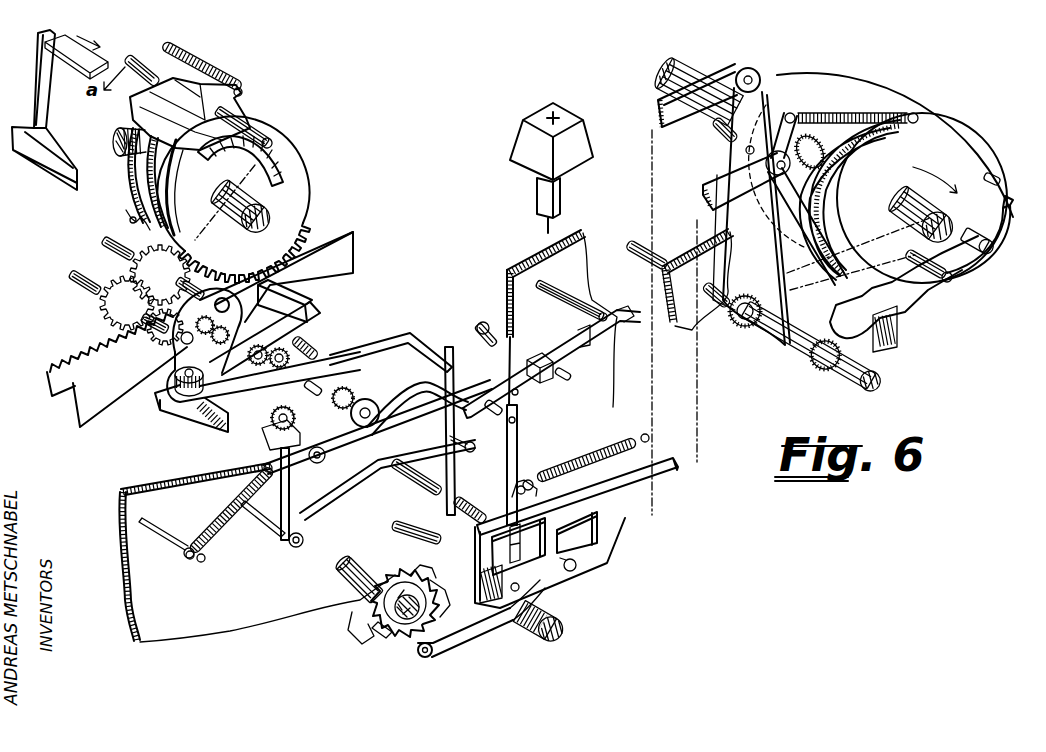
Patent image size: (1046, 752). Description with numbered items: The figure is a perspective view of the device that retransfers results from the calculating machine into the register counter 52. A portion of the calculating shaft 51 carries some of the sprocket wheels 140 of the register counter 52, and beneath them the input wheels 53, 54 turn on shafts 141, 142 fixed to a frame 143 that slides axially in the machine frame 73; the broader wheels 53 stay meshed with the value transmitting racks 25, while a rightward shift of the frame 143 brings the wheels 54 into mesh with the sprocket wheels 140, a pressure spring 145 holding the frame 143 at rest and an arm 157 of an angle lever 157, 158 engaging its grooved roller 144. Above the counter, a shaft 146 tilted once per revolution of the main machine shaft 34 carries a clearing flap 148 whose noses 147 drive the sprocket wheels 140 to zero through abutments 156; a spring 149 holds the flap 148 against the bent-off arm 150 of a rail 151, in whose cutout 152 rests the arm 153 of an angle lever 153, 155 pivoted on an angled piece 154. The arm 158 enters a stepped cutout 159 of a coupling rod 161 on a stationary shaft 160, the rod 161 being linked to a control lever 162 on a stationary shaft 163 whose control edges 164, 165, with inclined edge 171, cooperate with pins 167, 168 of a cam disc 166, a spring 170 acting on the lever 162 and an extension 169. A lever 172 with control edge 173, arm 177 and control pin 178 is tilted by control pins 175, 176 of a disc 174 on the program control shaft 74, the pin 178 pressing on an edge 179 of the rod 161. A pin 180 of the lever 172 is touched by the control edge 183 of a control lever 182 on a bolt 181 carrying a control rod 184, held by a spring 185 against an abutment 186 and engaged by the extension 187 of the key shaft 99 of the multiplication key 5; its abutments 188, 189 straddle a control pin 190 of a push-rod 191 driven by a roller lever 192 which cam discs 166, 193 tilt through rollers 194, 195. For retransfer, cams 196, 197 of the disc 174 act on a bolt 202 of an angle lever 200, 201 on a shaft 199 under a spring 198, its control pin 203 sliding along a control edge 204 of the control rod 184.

The multiplication key 5 is at (575, 145).
The value transmitting racks 25 is at (72, 406).
The main machine shaft 34 is at (668, 72).
The calculating shaft 51 is at (268, 216).
The register counter 52 is at (293, 173).
The input wheels 53 is at (98, 300).
The input wheels 54 is at (120, 263).
The machine frame 73 is at (325, 352).
The program control shaft 74 is at (345, 580).
The key shaft 99 is at (560, 200).
The sprocket wheels 140 is at (272, 152).
The shaft 141 is at (72, 276).
The shaft 142 is at (110, 240).
The frame 143 is at (157, 355).
The roller 144 is at (378, 400).
The pressure spring 145 is at (268, 352).
The shaft 146 is at (257, 127).
The noses 147 is at (143, 120).
The clearing flap 148 is at (156, 78).
The spring 149 is at (217, 61).
The bent-off arm 150 is at (44, 62).
The rail 151 is at (25, 153).
The cutout 152 is at (298, 292).
The arm of angle lever 153 is at (313, 297).
The angled piece 154 is at (203, 417).
The arm of angle lever 155 is at (387, 343).
The abutments 156 is at (131, 219).
The arm of angle lever 157 is at (365, 398).
The arm of angle lever 158 is at (377, 480).
The stepped cutout 159 is at (500, 540).
The machine stationary shaft 160 is at (577, 566).
The coupling rod 161 is at (667, 483).
The control lever 162 is at (795, 347).
The machine stationary shaft 163 is at (856, 382).
The control edge 164 is at (957, 282).
The control edge 165 is at (935, 128).
The cam disc 166 is at (958, 147).
The pin 167 is at (947, 283).
The pin 168 is at (999, 179).
The extension 169 is at (755, 76).
The spring 170 is at (878, 112).
The inclined edge 171 is at (862, 290).
The lever 172 is at (478, 495).
The control edge 173 is at (440, 605).
The disc 174 is at (393, 587).
The control pin 175 is at (403, 557).
The control pin 176 is at (370, 632).
The arm 177 is at (451, 347).
The control pin 178 is at (522, 590).
The edge 179 is at (540, 583).
The pin 180 is at (445, 462).
The machine stationary bolt 181 is at (274, 532).
The control lever 182 is at (303, 514).
The control edge 183 is at (474, 449).
The control rod 184 is at (625, 304).
The spring 185 is at (210, 527).
The abutment 186 is at (577, 288).
The extension 187 is at (518, 300).
The abutment 188 is at (548, 362).
The abutment 189 is at (598, 337).
The control pin 190 is at (490, 330).
The push-rod 191 is at (478, 328).
The roller lever 192 is at (720, 216).
The cam disc 193 is at (823, 96).
The pin or roller 194 is at (990, 262).
The pin or roller 195 is at (717, 128).
The cam 196 is at (430, 565).
The cam 197 is at (352, 618).
The spring 198 is at (632, 447).
The machine stationary shaft 199 is at (560, 632).
The arm of angle lever 200 is at (510, 632).
The arm of angle lever 201 is at (540, 489).
The bolt 202 is at (418, 652).
The control pin 203 is at (502, 407).
The control edge 204 is at (518, 393).